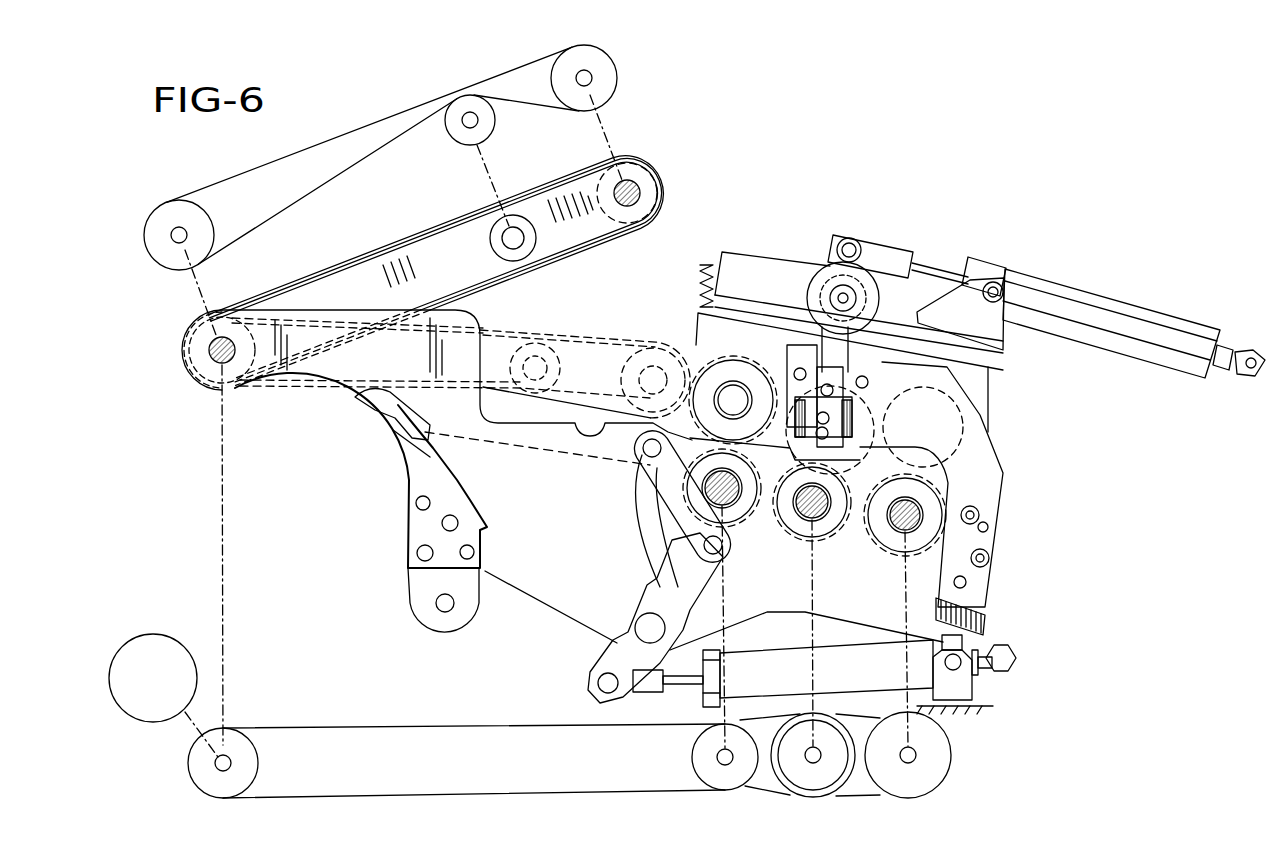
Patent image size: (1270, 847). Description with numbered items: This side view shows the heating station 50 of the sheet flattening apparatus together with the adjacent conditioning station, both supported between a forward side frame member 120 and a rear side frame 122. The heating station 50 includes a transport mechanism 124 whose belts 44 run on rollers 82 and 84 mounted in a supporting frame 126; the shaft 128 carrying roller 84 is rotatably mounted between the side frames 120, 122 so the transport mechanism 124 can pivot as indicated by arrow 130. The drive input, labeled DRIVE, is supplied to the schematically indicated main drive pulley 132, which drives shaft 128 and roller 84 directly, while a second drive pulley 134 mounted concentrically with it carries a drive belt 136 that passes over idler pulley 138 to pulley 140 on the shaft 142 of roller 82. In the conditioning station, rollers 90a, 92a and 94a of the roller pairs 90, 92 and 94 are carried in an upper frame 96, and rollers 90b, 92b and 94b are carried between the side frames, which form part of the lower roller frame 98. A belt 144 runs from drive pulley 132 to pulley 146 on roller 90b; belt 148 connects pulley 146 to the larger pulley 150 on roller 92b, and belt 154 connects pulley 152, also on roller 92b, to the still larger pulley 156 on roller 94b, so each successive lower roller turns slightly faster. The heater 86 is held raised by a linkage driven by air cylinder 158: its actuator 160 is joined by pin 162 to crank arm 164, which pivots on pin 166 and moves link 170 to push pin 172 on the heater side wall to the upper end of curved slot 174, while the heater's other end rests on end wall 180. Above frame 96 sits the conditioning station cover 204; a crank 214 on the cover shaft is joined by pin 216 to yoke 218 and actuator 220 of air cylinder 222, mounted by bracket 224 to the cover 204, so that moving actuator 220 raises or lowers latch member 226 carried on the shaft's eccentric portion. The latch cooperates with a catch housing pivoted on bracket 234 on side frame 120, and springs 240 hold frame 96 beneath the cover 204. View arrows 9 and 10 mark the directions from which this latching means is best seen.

The section line 9- 9 is at (1125, 383).
The section line 10- 10 is at (713, 172).
The belts 44 is at (660, 197).
The heating station 50 is at (645, 141).
The roller 82 is at (648, 175).
The roller 84 is at (198, 345).
The heater 86 is at (378, 415).
The roller pair 90 is at (711, 381).
The roller 90a is at (760, 382).
The roller 90b is at (728, 510).
The roller pair 92 is at (795, 542).
The roller 92a is at (868, 414).
The roller 92b is at (808, 540).
The roller pair 94 is at (877, 534).
The roller 94a is at (957, 420).
The roller 94b is at (882, 545).
The upper frame 96 is at (990, 395).
The lower roller frame 98 is at (942, 567).
The forward side frame member 120 is at (548, 595).
The rear side frame 122 is at (415, 600).
The transport mechanism 124 is at (421, 219).
The supporting frame 126 is at (330, 278).
The shaft 128 is at (215, 362).
The arrow 130 is at (665, 335).
The drive pulley 132 is at (200, 768).
The second drive pulley 134 is at (170, 212).
The drive belt 136 is at (280, 155).
The idler pulley 138 is at (470, 107).
The pulley 140 is at (577, 60).
The shaft 142 is at (615, 185).
The belt 144 is at (340, 727).
The drive pulley 146 is at (700, 760).
The belt 148 is at (762, 715).
The pulley 150 is at (812, 717).
The pulley 152 is at (826, 738).
The belt 154 is at (877, 717).
The pulley 156 is at (945, 750).
The air actuated cylinder 158 is at (792, 657).
The actuator 160 is at (688, 684).
The pin 162 is at (598, 680).
The crank arm 164 is at (650, 581).
The pin 166 is at (645, 625).
The link 170 is at (660, 486).
The pin 172 is at (645, 448).
The curved slot 174 is at (642, 525).
The end wall 180 is at (407, 510).
The conditioning station cover 204 is at (770, 265).
The crank 214 is at (825, 265).
The pin 216 is at (860, 238).
The yoke 218 is at (876, 248).
The actuator 220 is at (940, 262).
The air cylinder 222 is at (1110, 300).
The bracket 224 is at (998, 322).
The latch member 226 is at (858, 376).
The bracket 234 is at (990, 468).
The springs 240 is at (703, 278).
The drive motor DRIVE is at (153, 678).